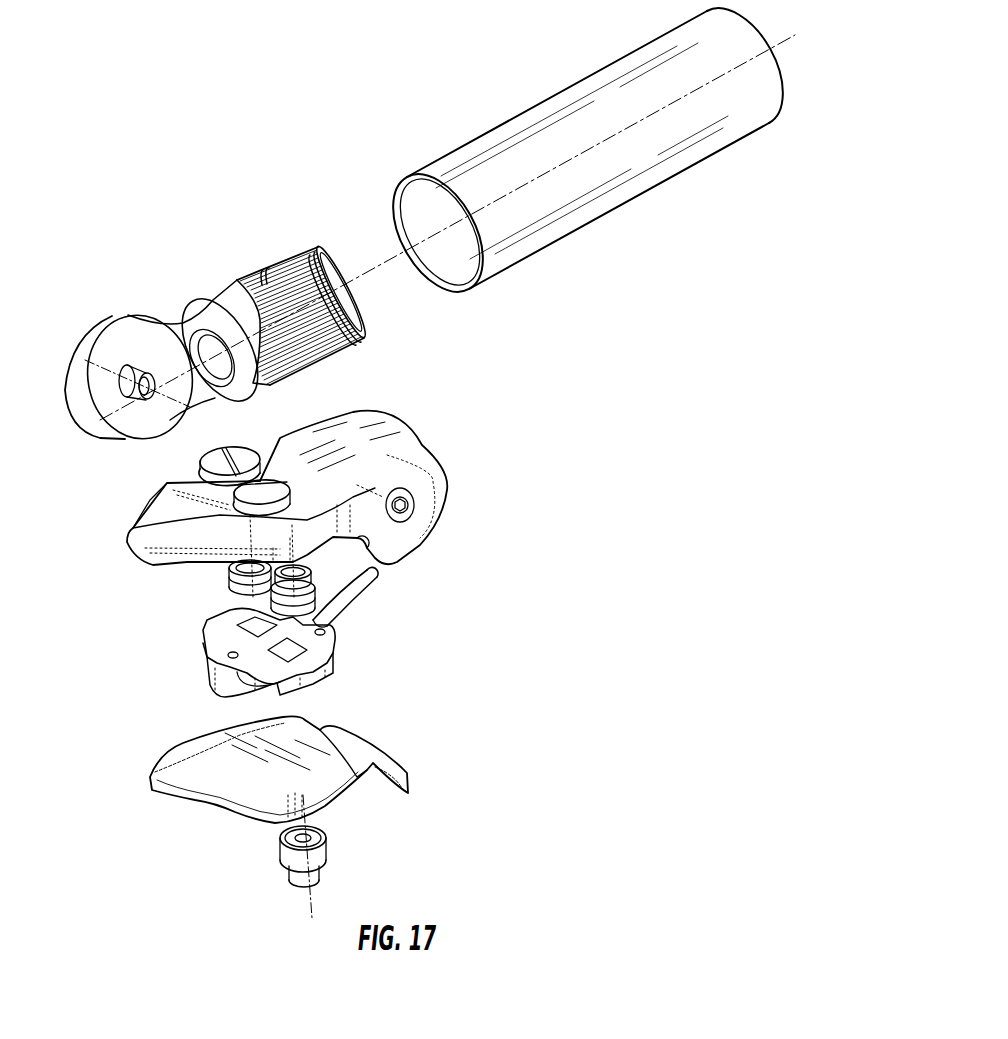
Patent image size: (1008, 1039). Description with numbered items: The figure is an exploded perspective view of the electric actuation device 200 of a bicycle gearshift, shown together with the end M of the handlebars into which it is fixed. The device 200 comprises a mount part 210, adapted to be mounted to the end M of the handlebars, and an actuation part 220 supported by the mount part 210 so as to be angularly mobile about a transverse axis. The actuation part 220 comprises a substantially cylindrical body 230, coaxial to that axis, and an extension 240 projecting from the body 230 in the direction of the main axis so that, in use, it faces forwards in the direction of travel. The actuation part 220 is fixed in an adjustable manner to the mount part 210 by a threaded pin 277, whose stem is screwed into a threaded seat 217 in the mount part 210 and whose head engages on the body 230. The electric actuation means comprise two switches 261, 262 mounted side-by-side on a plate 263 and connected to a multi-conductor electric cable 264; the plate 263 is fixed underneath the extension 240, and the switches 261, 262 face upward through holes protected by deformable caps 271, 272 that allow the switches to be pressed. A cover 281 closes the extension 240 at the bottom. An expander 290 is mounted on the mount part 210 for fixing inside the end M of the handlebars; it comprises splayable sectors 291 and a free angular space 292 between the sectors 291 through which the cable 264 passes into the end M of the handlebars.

The electric actuation device 200 is at (205, 148).
The end of handlebars M is at (620, 175).
The mount part 210 is at (120, 322).
The threaded seat 217 is at (143, 397).
The expander 290 is at (355, 268).
The splayable sectors 291 is at (300, 247).
The free angular space 292 is at (353, 310).
The actuation part 220 is at (466, 416).
The substantially cylindrical body 230 is at (432, 485).
The extension 240 is at (167, 483).
The cap 271 is at (205, 450).
The cap 272 is at (267, 488).
The threaded pin 277 is at (413, 510).
The switch 261 is at (228, 586).
The switch 262 is at (312, 570).
The plate 263 is at (323, 647).
The multi-conductor electric cable 264 is at (380, 578).
The cover 281 is at (330, 795).